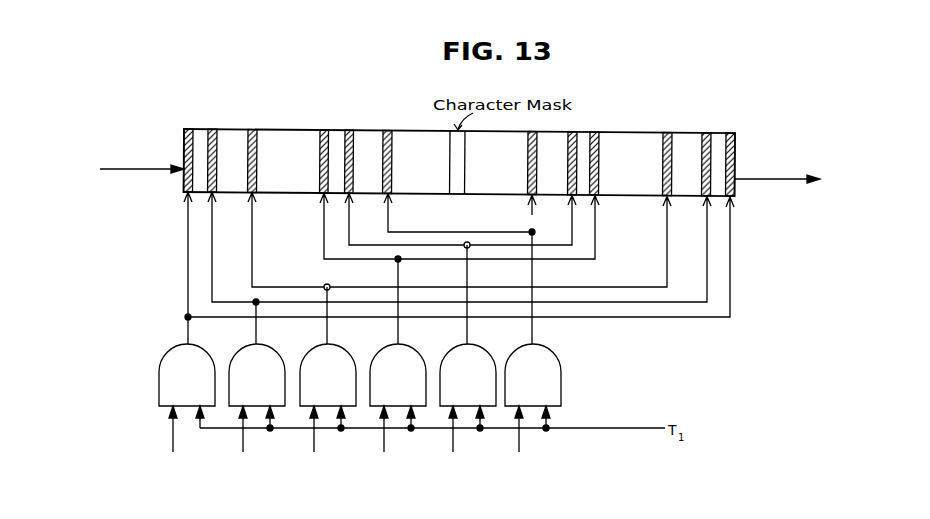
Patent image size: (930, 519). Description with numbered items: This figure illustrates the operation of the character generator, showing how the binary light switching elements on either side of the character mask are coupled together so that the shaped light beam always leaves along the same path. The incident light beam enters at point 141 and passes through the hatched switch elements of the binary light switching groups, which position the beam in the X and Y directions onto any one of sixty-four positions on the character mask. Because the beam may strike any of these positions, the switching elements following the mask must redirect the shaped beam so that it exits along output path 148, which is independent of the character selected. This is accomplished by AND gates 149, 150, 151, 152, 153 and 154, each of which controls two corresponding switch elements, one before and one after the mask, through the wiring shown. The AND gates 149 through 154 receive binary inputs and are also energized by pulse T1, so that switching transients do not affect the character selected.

The light beam entry point 141 is at (137, 147).
The output path 148 is at (795, 171).
The AND gate 149 is at (181, 357).
The AND gate 150 is at (250, 355).
The AND gate 151 is at (322, 357).
The AND gate 152 is at (394, 355).
The AND gate 153 is at (464, 355).
The AND gate 154 is at (528, 355).